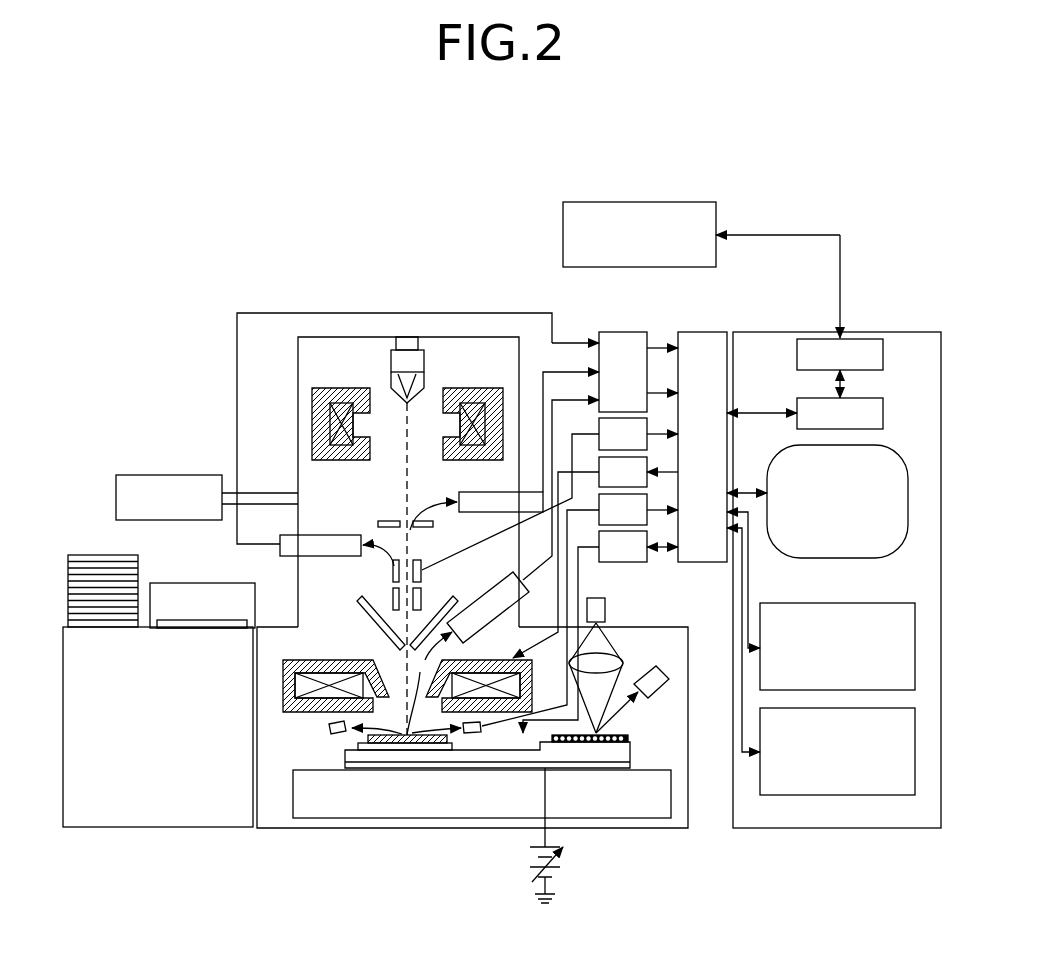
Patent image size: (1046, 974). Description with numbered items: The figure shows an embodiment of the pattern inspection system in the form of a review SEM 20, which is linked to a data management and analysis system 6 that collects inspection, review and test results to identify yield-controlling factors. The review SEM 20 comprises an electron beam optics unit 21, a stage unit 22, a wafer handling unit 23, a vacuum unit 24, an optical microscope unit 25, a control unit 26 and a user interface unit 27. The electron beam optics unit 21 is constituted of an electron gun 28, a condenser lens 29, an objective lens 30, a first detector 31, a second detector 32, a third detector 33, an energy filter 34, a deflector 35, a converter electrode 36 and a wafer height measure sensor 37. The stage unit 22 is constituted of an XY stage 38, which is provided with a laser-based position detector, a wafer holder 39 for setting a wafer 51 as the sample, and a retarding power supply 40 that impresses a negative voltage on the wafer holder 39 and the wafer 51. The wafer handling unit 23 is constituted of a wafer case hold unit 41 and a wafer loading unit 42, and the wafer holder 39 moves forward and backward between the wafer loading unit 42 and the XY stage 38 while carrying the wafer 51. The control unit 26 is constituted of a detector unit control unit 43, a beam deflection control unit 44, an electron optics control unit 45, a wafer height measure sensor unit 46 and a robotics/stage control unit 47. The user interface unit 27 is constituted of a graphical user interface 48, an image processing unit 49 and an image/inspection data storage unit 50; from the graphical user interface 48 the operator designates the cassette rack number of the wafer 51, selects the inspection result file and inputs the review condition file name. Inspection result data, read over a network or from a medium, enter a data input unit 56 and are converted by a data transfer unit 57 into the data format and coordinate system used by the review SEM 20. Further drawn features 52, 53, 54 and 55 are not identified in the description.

The data management and analysis system 6 is at (701, 270).
The review SEM 20 is at (178, 309).
The electron beam optics unit 21 is at (309, 377).
The stage unit 22 is at (337, 797).
The wafer handling unit 23 is at (160, 808).
The vacuum unit 24 is at (173, 490).
The optical microscope unit 25 is at (606, 613).
The control unit 26 is at (702, 447).
The user interface unit 27 is at (758, 392).
The electron gun 28 is at (418, 358).
The condenser lens 29 is at (340, 460).
The objective lens 30 is at (331, 675).
The first detector 31 is at (488, 590).
The second detector 32 is at (323, 557).
The third detector 33 is at (497, 514).
The energy filter 34 is at (393, 518).
The deflector 35 is at (425, 592).
The converter electrode 36 is at (380, 628).
The wafer height measure sensor 37 is at (330, 736).
The XY stage 38 is at (450, 764).
The wafer holder 39 is at (410, 752).
The retarding power supply 40 is at (573, 856).
The wafer case hold unit 41 is at (108, 553).
The wafer loading unit 42 is at (222, 621).
The detector unit control unit 43 is at (615, 372).
The beam deflection control unit 44 is at (550, 494).
The electron optics control unit 45 is at (595, 557).
The wafer height measure sensor unit 46 is at (545, 613).
The robotics/stage control unit 47 is at (600, 632).
The graphical user interface 48 is at (817, 501).
The image processing unit 49 is at (821, 601).
The image/inspection data storage unit 50 is at (821, 661).
The wafer 51 is at (383, 745).
The primary electron beam 52 is at (409, 470).
The secondary electrons 53 is at (422, 695).
The backscattered electrons 54 is at (380, 556).
The backscattered electrons 55 is at (410, 520).
The data input unit 56 is at (840, 368).
The data transfer unit 57 is at (805, 413).